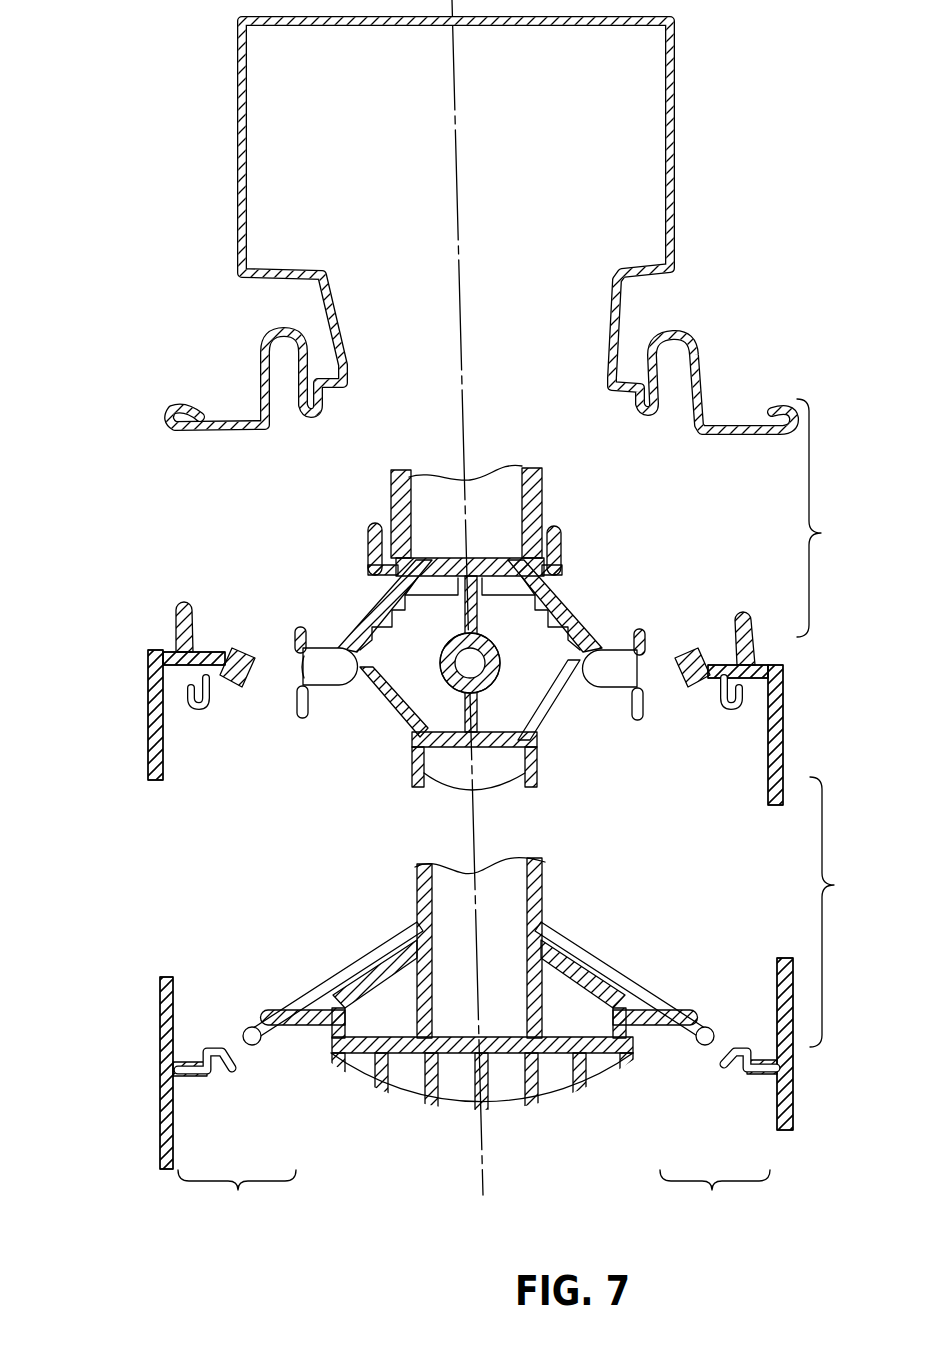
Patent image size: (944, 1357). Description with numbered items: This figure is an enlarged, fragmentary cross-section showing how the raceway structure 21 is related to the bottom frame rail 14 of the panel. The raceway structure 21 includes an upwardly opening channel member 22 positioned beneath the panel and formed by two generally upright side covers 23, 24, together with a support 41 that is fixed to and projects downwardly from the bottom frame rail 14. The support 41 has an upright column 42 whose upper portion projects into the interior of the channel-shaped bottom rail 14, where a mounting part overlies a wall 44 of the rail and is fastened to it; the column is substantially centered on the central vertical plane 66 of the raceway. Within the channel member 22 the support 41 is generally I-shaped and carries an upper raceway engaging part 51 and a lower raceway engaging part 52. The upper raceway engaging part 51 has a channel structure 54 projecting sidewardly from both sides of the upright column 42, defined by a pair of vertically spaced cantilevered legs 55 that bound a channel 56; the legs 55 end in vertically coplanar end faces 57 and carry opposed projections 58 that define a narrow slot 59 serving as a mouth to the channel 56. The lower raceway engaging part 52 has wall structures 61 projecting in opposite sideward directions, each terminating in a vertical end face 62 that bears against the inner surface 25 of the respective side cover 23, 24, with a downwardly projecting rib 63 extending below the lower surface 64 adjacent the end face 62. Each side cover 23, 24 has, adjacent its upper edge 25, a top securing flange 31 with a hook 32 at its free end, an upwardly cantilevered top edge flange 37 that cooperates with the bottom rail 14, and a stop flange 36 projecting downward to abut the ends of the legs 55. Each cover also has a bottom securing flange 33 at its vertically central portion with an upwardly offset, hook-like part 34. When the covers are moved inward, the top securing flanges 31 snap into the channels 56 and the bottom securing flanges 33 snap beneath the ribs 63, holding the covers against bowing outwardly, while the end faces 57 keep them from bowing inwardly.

The bottom frame rail 14 is at (462, 225).
The wall of bottom frame rail 44 is at (385, 24).
The central vertical plane 66 is at (462, 272).
The upright column 42 is at (542, 490).
The upper raceway engaging part 51 is at (455, 673).
The channel structure 54 is at (601, 647).
The cantilevered legs 55 is at (323, 646).
The channel 56 is at (335, 688).
The end faces 57 is at (297, 630).
The projections 58 is at (296, 700).
The narrow slot 59 is at (300, 665).
The side cover 23 is at (152, 775).
The side cover 24 is at (783, 733).
The top securing flange 31 is at (158, 680).
The hook 32 is at (240, 650).
The top edge flange 37 is at (180, 642).
The stop flange 36 is at (198, 708).
The raceway structure 21 is at (367, 1050).
The channel member 22 is at (152, 1041).
The upper edge 25 is at (778, 962).
The bottom securing flange 33 is at (196, 1060).
The upwardly offset part 34 is at (222, 1068).
The support 41 is at (412, 1120).
The lower raceway engaging part 52 is at (482, 1026).
The wall structure 61 is at (321, 972).
The end face 62 is at (250, 1027).
The rib 63 is at (700, 1046).
The lower surface 64 is at (290, 1040).